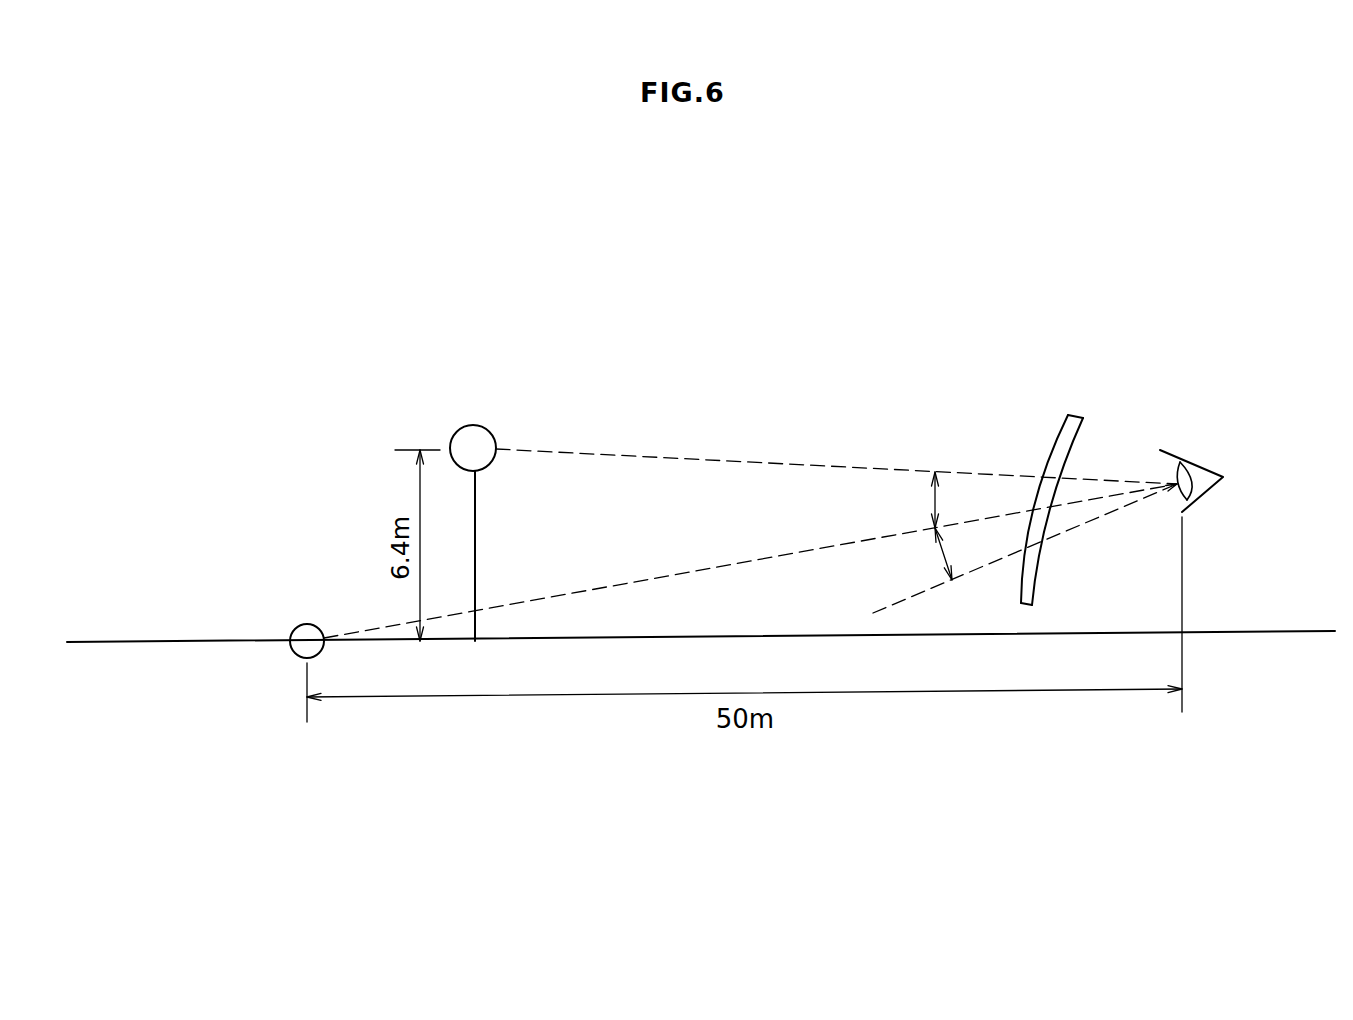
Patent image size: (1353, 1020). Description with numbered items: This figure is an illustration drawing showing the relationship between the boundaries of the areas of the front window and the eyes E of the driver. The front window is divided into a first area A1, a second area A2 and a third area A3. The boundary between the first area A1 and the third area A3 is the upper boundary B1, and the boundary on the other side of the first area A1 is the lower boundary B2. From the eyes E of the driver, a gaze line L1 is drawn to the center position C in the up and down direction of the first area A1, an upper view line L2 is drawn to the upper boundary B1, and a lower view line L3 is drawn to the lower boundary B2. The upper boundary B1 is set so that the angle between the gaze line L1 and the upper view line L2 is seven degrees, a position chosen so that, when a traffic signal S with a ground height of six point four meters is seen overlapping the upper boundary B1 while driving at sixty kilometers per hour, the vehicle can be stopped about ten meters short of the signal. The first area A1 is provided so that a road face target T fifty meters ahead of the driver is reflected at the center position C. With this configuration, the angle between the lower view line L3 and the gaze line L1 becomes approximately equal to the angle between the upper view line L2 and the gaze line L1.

The target object on road surface T is at (302, 624).
The light source (street lamp) S is at (487, 425).
The eyes E is at (1195, 463).
The gaze line L1 is at (690, 568).
The upper view line L2 is at (662, 457).
The lower view line L3 is at (928, 593).
The first area A1 is at (1019, 544).
The second area A2 is at (1018, 599).
The third area A3 is at (1045, 474).
The upper boundary B1 is at (1071, 477).
The lower boundary B2 is at (1046, 542).
The center position C is at (1056, 513).